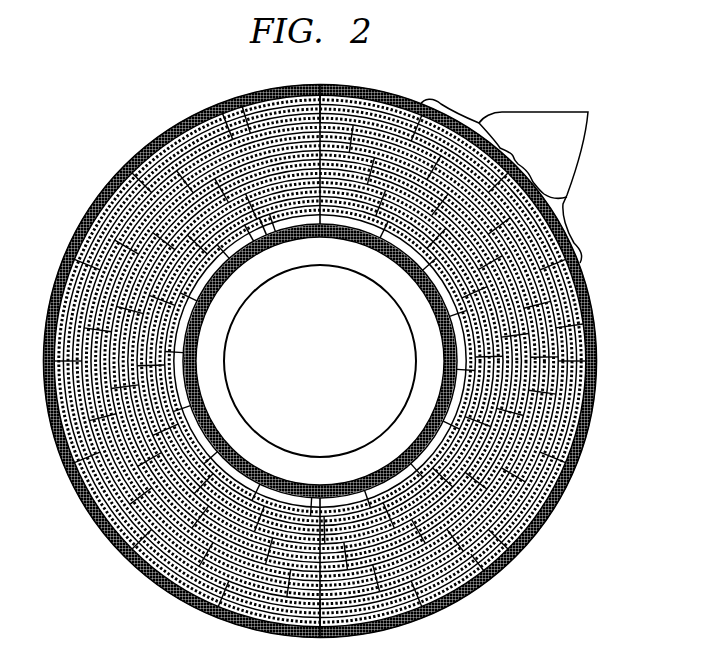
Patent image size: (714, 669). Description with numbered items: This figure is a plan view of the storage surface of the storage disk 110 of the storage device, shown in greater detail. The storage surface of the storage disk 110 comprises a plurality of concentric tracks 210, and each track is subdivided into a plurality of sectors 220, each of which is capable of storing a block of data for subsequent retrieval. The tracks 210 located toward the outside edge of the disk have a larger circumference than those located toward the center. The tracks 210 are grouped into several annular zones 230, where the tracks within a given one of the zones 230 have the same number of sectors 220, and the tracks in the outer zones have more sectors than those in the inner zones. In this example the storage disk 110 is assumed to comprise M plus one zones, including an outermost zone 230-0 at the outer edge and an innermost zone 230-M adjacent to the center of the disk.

The storage disk 110 is at (100, 155).
The concentric tracks 210 is at (528, 523).
The sectors 220 is at (523, 181).
The annular zones 230 is at (522, 397).
The outermost zone 230-0 is at (226, 108).
The innermost zone 230-M is at (254, 231).